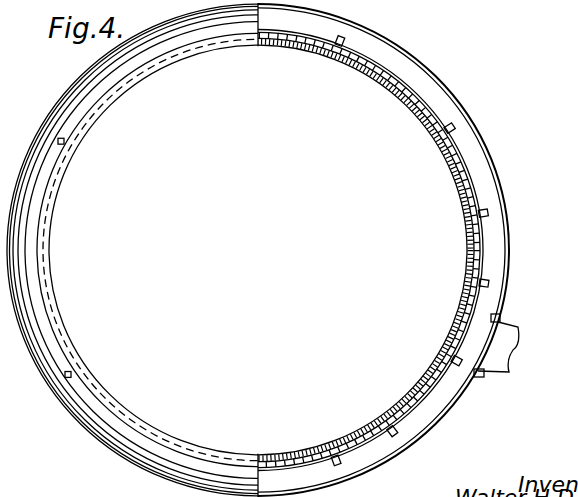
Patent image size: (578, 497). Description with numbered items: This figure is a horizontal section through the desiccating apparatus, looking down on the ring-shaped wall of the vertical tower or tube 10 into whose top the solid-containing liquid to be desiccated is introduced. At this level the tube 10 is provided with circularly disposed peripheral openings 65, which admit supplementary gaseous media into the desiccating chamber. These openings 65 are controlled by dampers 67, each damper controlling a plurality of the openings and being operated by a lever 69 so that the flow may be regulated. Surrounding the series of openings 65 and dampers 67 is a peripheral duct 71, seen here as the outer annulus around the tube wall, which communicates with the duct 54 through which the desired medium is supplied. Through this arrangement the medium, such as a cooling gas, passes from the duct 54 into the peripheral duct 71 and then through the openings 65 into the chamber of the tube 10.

The vertical tower or tube 10 is at (385, 116).
The duct 54 is at (509, 360).
The openings 65 is at (296, 43).
The dampers 67 is at (482, 267).
The lever 69 is at (456, 125).
The peripheral duct 71 is at (493, 207).